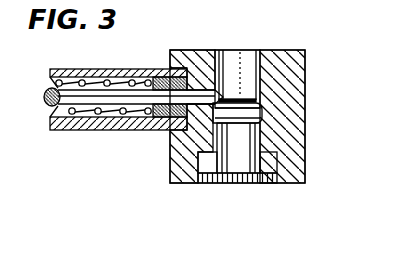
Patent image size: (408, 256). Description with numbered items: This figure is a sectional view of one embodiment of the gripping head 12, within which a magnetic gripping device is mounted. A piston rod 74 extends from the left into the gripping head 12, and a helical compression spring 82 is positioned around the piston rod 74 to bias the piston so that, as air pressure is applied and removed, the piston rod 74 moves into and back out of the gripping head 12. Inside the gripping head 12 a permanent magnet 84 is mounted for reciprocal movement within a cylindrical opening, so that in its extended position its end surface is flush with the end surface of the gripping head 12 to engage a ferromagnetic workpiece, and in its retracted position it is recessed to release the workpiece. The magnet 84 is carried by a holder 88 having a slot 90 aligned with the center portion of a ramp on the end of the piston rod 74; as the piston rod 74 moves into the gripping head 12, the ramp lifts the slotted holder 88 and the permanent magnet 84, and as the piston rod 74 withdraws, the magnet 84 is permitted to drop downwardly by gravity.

The gripping head 12 is at (186, 30).
The piston rod 74 is at (118, 97).
The helical compression spring 82 is at (80, 109).
The permanent magnet 84 is at (231, 164).
The holder 88 is at (246, 66).
The slot 90 is at (248, 111).